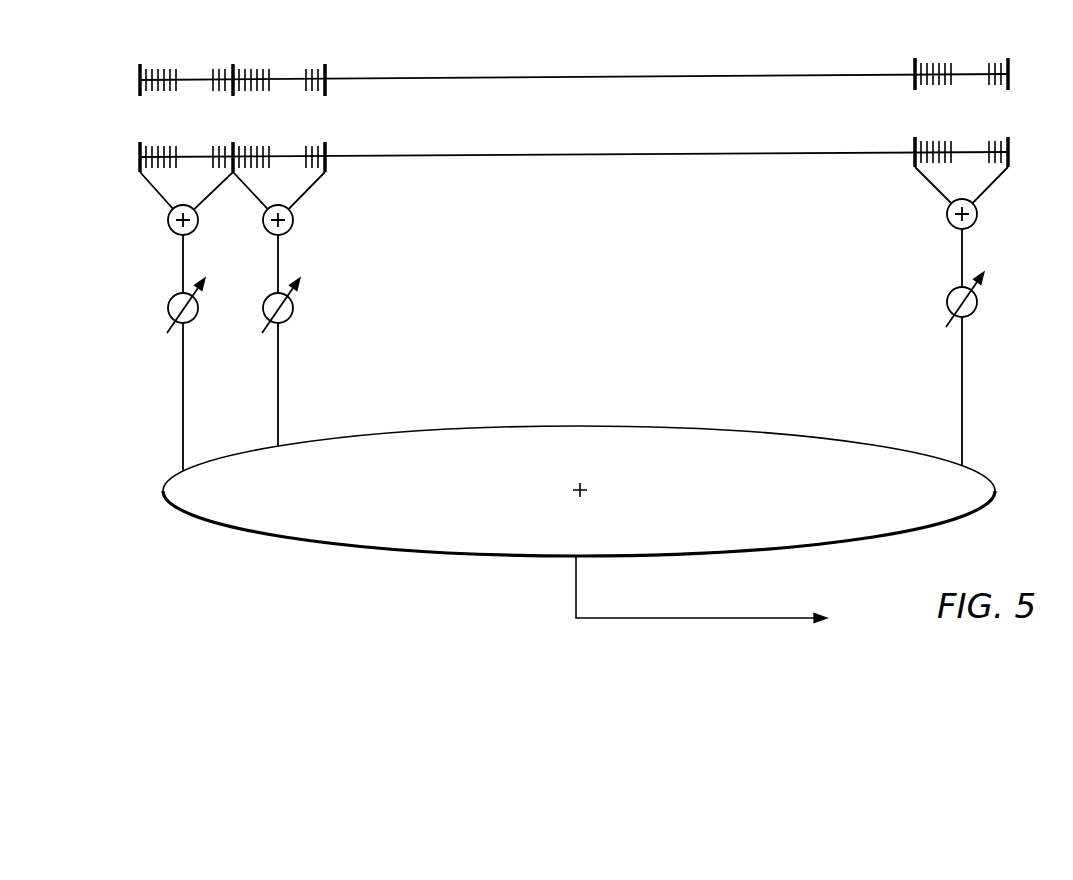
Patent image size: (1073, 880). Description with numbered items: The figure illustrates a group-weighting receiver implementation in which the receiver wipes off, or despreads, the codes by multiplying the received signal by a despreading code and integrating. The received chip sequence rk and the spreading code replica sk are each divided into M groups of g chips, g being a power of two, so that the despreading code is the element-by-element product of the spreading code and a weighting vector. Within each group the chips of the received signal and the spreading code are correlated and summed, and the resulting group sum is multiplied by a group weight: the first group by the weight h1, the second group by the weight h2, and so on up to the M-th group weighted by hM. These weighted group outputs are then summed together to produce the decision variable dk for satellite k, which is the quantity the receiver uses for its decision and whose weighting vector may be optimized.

The received signal vector rk is at (559, 63).
The spreading code sk is at (559, 155).
The first group weight h1 is at (172, 353).
The second group weight h2 is at (270, 340).
The M-th group weight hM is at (948, 347).
The decision variable dk is at (701, 590).